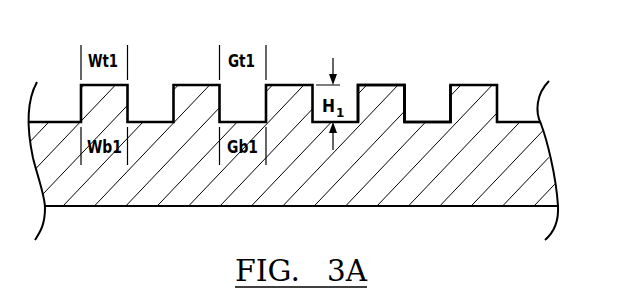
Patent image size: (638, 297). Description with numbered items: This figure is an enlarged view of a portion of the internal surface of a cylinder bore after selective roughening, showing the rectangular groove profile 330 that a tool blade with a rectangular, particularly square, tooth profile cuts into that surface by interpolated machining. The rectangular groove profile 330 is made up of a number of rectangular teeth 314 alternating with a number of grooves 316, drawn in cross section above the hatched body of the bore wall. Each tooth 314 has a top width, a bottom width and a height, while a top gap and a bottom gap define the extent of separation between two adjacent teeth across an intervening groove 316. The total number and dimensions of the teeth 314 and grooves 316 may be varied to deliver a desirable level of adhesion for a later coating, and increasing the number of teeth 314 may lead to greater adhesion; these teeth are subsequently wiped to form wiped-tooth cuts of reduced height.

The rectangular-tooth cut 314 is at (384, 82).
The groove 316 is at (426, 112).
The rectangular groove profile 330 is at (555, 80).